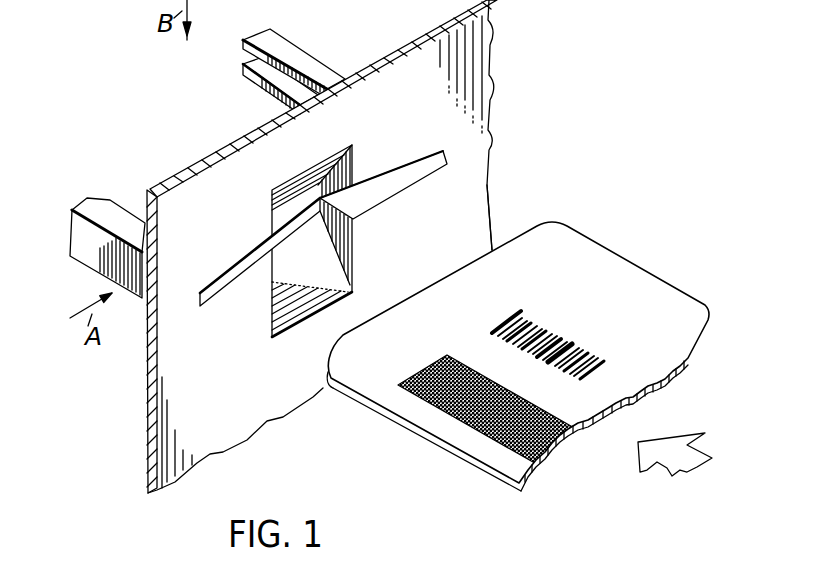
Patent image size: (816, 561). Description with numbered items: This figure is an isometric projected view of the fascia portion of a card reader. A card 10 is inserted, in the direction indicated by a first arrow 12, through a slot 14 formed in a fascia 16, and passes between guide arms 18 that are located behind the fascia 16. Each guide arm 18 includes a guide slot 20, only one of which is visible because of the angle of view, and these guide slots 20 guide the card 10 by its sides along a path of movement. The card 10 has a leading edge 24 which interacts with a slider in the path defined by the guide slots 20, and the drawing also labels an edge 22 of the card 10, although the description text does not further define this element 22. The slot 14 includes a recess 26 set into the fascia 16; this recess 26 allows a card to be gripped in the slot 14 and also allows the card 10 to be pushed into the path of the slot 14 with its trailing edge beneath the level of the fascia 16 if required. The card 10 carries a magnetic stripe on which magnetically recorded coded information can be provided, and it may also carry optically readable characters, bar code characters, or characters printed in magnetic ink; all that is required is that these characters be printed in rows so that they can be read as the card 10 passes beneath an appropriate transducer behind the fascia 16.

The card 10 is at (558, 238).
The first arrow 12 is at (670, 473).
The slot 14 is at (415, 178).
The fascia 16 is at (472, 181).
The guide arms 18 is at (287, 57).
The guide slot 20 is at (243, 67).
The card edge 22 is at (630, 258).
The leading edge 24 is at (493, 244).
The recess 26 is at (287, 316).